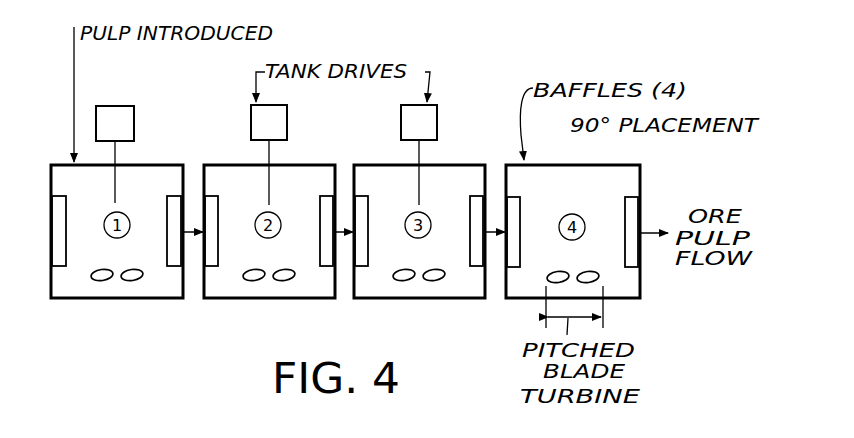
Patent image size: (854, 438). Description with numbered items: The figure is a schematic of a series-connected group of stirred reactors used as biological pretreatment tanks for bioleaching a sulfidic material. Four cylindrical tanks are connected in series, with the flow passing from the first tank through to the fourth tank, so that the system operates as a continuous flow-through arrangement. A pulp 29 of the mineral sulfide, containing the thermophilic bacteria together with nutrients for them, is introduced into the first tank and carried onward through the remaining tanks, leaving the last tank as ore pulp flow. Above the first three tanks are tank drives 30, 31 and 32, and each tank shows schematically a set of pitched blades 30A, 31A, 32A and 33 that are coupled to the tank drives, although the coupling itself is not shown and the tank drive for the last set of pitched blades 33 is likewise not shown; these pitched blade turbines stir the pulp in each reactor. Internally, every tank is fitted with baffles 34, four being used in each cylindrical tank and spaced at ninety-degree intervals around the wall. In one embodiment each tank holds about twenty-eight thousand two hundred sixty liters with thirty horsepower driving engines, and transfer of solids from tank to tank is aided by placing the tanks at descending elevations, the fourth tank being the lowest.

The pulp 29 is at (123, 94).
The tank drive 30 is at (134, 122).
The tank drive 31 is at (287, 122).
The tank drive 32 is at (437, 122).
The pitched blades 30A is at (103, 280).
The pitched blades 31A is at (250, 280).
The pitched blades 32A is at (398, 280).
The pitched blades 33 is at (607, 277).
The baffles 34 is at (67, 218).